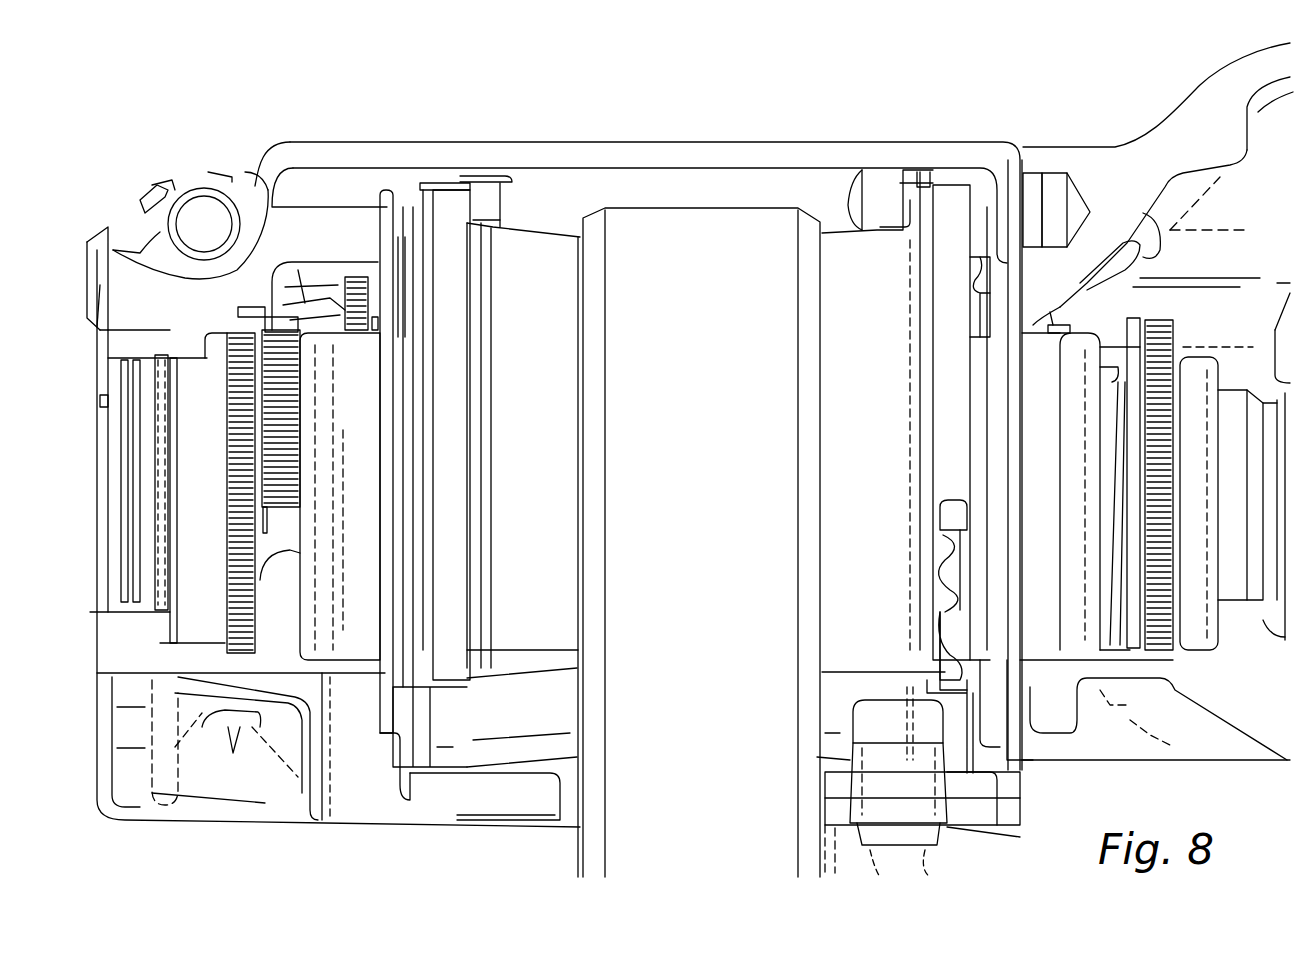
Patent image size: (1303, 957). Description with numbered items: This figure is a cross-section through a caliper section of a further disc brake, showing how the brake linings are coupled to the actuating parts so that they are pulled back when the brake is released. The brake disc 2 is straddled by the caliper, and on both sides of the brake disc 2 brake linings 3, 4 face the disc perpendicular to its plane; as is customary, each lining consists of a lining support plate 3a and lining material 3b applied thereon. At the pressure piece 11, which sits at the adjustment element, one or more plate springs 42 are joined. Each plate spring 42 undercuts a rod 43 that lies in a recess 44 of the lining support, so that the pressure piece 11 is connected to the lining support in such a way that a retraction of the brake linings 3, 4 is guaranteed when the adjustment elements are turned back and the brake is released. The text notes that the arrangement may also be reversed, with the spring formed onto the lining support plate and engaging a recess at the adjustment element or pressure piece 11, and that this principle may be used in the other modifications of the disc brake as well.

The brake disc 2 is at (672, 228).
The brake lining 3 is at (922, 192).
The lining support plate 3a is at (860, 258).
The lining material 3b is at (960, 183).
The brake lining 4 is at (542, 215).
The pressure piece 11 is at (980, 368).
The plate spring 42 is at (960, 572).
The rod 43 is at (957, 578).
The recess 44 is at (947, 617).